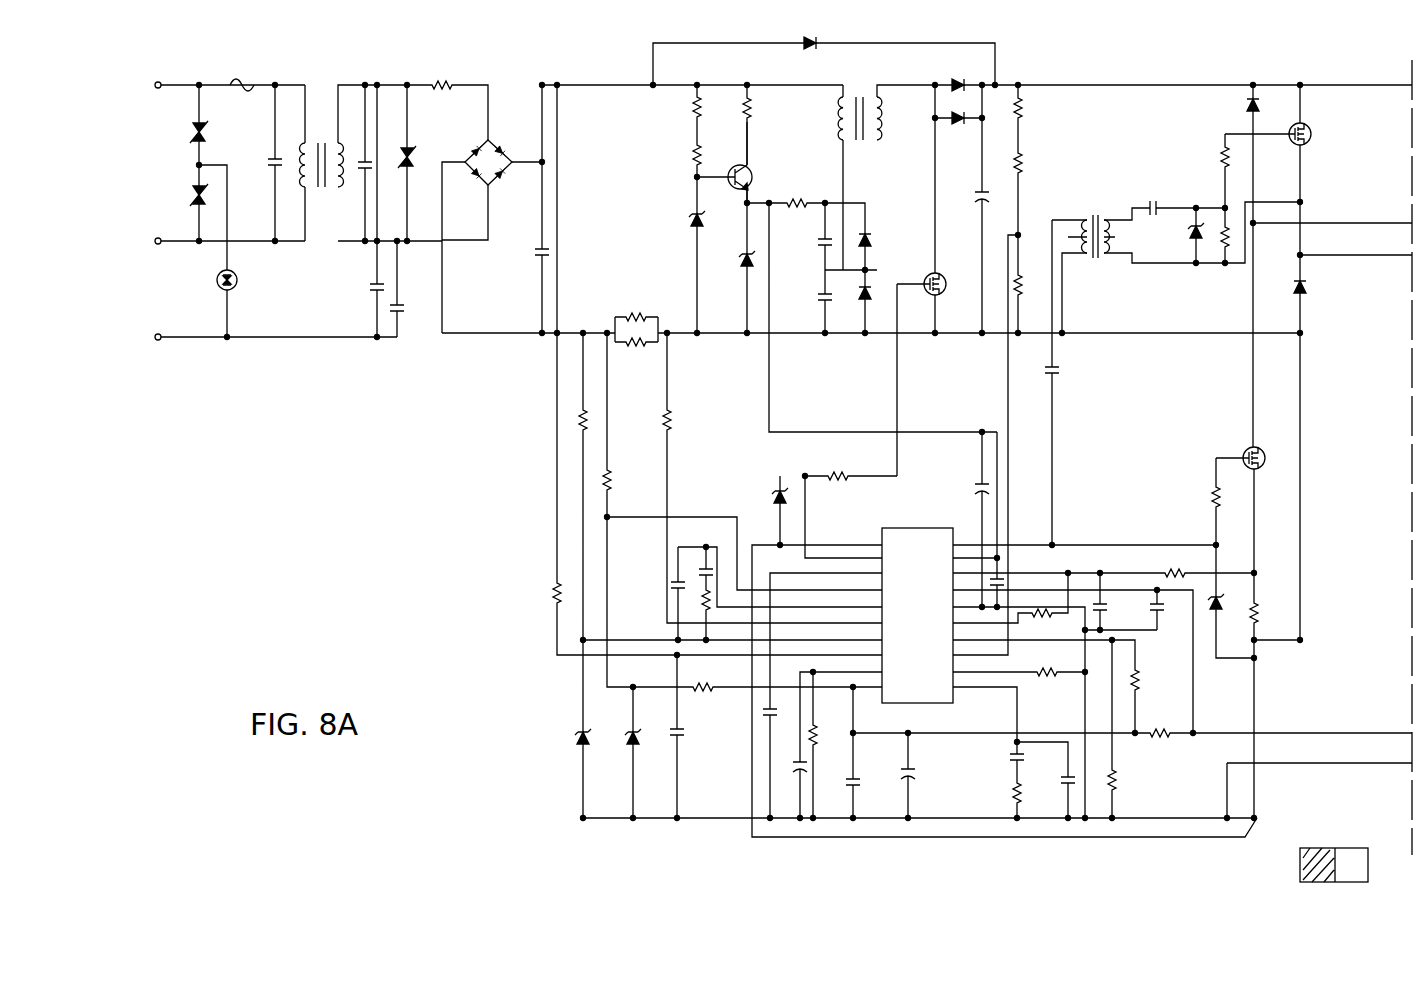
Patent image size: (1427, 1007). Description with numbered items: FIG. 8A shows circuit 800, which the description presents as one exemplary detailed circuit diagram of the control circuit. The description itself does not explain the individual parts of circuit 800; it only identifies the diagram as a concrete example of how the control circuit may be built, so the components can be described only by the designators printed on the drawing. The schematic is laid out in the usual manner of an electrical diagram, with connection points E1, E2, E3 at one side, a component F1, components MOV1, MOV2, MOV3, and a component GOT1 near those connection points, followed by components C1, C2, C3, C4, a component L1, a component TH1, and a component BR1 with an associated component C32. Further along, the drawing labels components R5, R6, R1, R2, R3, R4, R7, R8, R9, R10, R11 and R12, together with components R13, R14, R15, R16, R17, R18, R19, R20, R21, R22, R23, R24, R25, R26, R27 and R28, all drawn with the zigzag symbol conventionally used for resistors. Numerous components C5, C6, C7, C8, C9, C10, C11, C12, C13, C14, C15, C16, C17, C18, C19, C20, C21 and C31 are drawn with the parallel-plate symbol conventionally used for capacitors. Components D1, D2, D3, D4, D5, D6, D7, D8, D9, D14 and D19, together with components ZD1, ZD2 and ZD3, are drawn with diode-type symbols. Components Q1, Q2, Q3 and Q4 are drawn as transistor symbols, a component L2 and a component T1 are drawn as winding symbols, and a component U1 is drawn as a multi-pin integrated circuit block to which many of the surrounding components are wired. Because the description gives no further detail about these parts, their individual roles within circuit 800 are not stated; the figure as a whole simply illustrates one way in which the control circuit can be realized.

The circuit 800 is at (347, 634).
The line input terminal E1 is at (149, 95).
The neutral input terminal E2 is at (150, 253).
The ground terminal E3 is at (161, 348).
The fuse F1 is at (245, 75).
The metal oxide varistor MOV1 is at (174, 132).
The metal oxide varistor MOV2 is at (174, 195).
The metal oxide varistor MOV3 is at (425, 150).
The gas discharge tube GOT1 is at (255, 280).
The capacitor C1 is at (272, 161).
The capacitor C2 is at (370, 161).
The capacitor C3 is at (329, 288).
The capacitor C4 is at (399, 327).
The common mode inductor L1 is at (329, 188).
The thermistor TH1 is at (444, 85).
The bridge rectifier BR1 is at (496, 176).
The capacitor C32 is at (526, 253).
The resistor R5 is at (645, 299).
The resistor R6 is at (687, 354).
The resistor R1 is at (540, 592).
The resistor R2 is at (557, 426).
The resistor R3 is at (628, 484).
The resistor R4 is at (673, 611).
The resistor R7 is at (685, 426).
The resistor R8 is at (717, 113).
The resistor R9 is at (680, 161).
The resistor R10 is at (708, 687).
The resistor R11 is at (766, 113).
The resistor R12 is at (803, 193).
The resistor R13 is at (832, 740).
The resistor R14 is at (848, 475).
The resistor R15 is at (1000, 807).
The resistor R16 is at (1039, 113).
The resistor R17 is at (1039, 170).
The resistor R18 is at (1035, 293).
The resistor R19 is at (1053, 691).
The resistor R20 is at (1044, 634).
The resistor R21 is at (1133, 778).
The resistor R22 is at (1155, 675).
The resistor R23 is at (1164, 730).
The resistor R24 is at (1187, 562).
The resistor R25 is at (1184, 491).
The resistor R26 is at (1199, 149).
The resistor R27 is at (1227, 266).
The resistor R28 is at (1292, 633).
The capacitor C5 is at (665, 566).
The capacitor C6 is at (696, 554).
The capacitor C7 is at (956, 476).
The capacitor C8 is at (1120, 608).
The capacitor C9 is at (760, 716).
The capacitor C10 is at (768, 774).
The capacitor C11 is at (811, 251).
The capacitor C12 is at (811, 304).
The capacitor C13 is at (870, 776).
The capacitor C14 is at (925, 769).
The bulk capacitor C15 is at (979, 195).
The capacitor C16 is at (1001, 751).
The capacitor C17 is at (1019, 575).
The capacitor C18 is at (1055, 776).
The capacitor C19 is at (1076, 370).
The capacitor C20 is at (1176, 620).
The capacitor C21 is at (1141, 196).
The capacitor C31 is at (696, 737).
The diode D1 is at (558, 728).
The diode D2 is at (615, 734).
The diode D3 is at (813, 39).
The diode D4 is at (755, 482).
The diode D5 is at (892, 230).
The diode D6 is at (870, 318).
The boost diode D7 is at (953, 57).
The diode D8 is at (1230, 614).
The diode D9 is at (1226, 104).
The diode D14 is at (935, 140).
The diode D19 is at (1332, 295).
The zener diode ZD1 is at (659, 225).
The zener diode ZD2 is at (730, 267).
The zener diode ZD3 is at (1183, 239).
The transistor Q1 is at (769, 162).
The boost MOSFET Q2 is at (940, 285).
The MOSFET Q3 is at (1229, 456).
The MOSFET Q4 is at (1340, 132).
The boost inductor L2 is at (860, 108).
The gate drive transformer T1 is at (1092, 228).
The PFC controller IC U1 is at (917, 615).